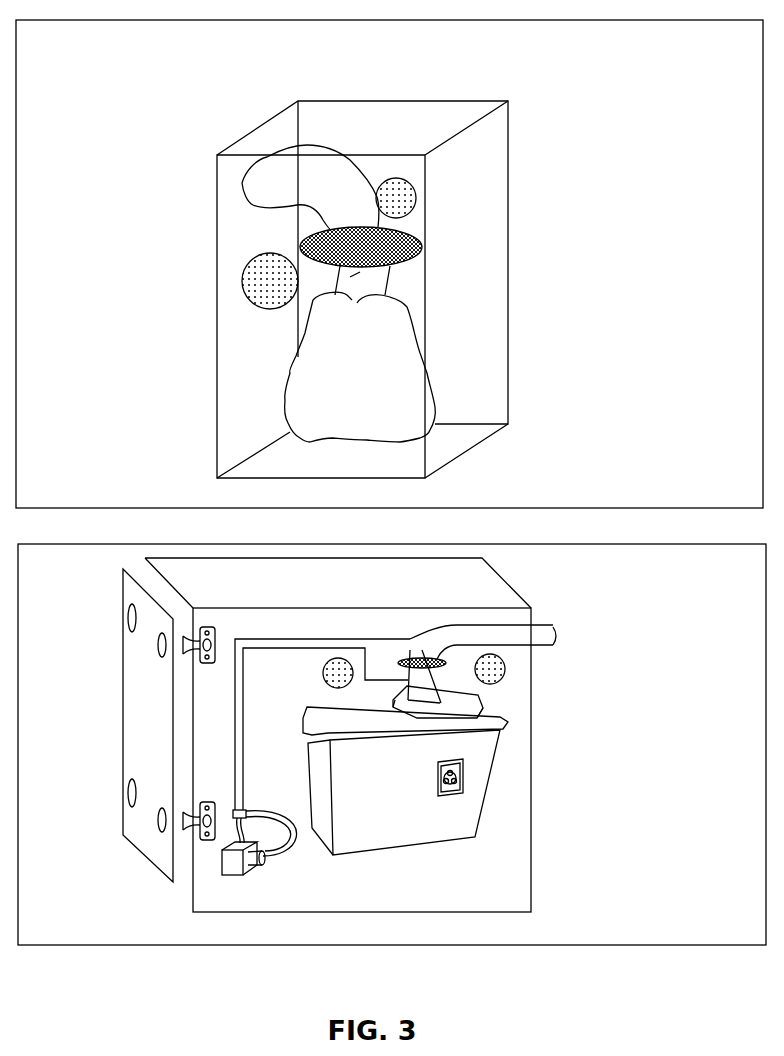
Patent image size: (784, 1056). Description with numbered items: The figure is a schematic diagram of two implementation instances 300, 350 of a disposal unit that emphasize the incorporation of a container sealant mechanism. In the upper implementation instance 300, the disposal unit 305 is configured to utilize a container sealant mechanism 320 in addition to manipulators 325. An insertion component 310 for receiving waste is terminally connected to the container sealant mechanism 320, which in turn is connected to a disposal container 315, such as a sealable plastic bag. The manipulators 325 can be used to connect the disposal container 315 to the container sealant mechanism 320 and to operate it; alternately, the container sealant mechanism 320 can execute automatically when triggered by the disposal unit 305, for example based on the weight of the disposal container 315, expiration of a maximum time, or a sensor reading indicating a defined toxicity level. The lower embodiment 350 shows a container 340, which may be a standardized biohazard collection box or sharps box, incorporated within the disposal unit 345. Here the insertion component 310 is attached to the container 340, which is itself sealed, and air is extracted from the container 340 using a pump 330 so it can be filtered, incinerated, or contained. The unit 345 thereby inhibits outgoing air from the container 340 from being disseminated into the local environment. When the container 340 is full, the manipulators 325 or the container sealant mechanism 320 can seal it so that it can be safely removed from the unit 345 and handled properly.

The implementation instance 300 is at (720, 51).
The disposal unit 305 is at (372, 101).
The insertion component 310 is at (273, 192).
The disposal container 315 is at (360, 367).
The container sealant mechanism 320 is at (432, 657).
The manipulators 325 is at (277, 288).
The pump 330 is at (232, 877).
The container 340 is at (375, 853).
The disposal unit 345 is at (500, 575).
The embodiment 350 is at (723, 571).